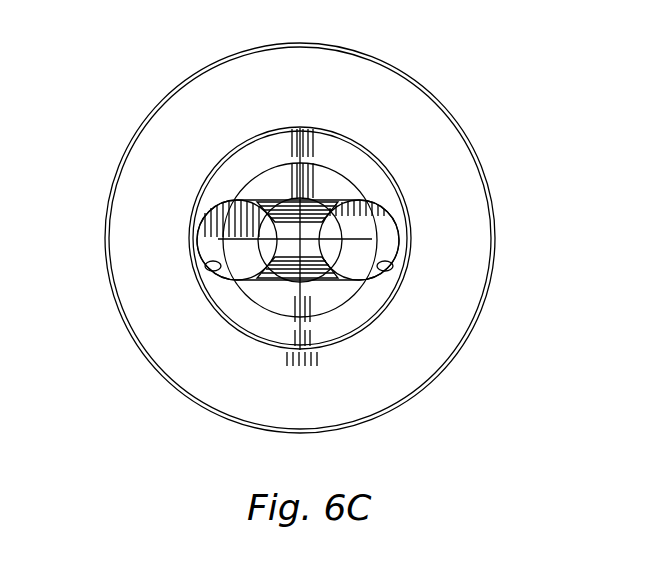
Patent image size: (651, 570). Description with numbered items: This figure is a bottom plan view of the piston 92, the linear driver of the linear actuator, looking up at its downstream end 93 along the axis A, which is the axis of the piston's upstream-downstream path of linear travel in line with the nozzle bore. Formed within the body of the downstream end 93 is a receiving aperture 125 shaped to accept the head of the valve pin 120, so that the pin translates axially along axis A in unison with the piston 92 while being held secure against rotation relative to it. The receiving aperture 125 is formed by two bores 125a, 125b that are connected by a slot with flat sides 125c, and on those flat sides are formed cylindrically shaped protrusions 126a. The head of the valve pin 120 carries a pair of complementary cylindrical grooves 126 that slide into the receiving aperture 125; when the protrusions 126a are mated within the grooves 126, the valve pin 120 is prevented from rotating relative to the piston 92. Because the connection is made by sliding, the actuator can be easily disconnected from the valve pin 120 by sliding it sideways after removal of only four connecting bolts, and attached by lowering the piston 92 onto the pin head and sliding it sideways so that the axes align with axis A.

The piston 92 is at (166, 78).
The downstream end of piston 93 is at (195, 197).
The valve pin 120 is at (283, 210).
The receiving aperture 125 is at (388, 213).
The bore 125a is at (192, 271).
The bore 125b is at (407, 268).
The slot with flat sides 125c is at (275, 277).
The cylindrical grooves 126 is at (370, 183).
The cylindrically shaped protrusions 126a is at (318, 203).
The axis A is at (305, 235).